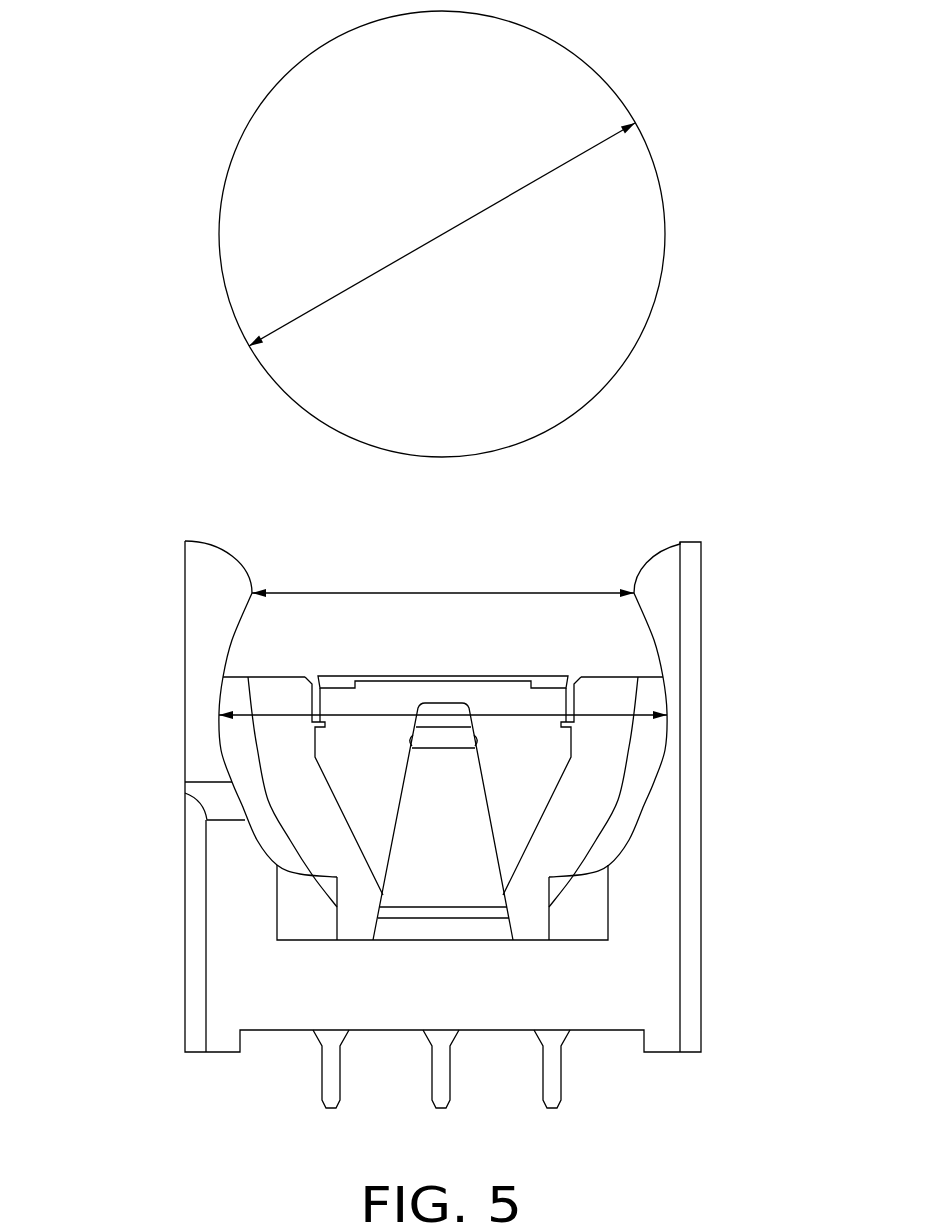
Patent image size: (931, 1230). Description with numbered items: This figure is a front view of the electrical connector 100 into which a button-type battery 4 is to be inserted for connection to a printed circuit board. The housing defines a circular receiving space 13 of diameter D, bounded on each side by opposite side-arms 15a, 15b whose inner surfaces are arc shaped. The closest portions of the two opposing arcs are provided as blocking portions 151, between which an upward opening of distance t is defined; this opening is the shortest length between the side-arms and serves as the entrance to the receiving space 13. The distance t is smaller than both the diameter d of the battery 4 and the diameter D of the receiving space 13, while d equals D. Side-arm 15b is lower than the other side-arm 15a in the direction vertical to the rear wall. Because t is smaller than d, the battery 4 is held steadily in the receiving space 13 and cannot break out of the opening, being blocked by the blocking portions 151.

The button-type battery 4 is at (607, 276).
The electrical connector 100 is at (697, 526).
The receiving space 13 is at (515, 807).
The side-arm 15a is at (672, 657).
The side-arm 15b is at (203, 658).
The blocking portion 151 is at (250, 582).